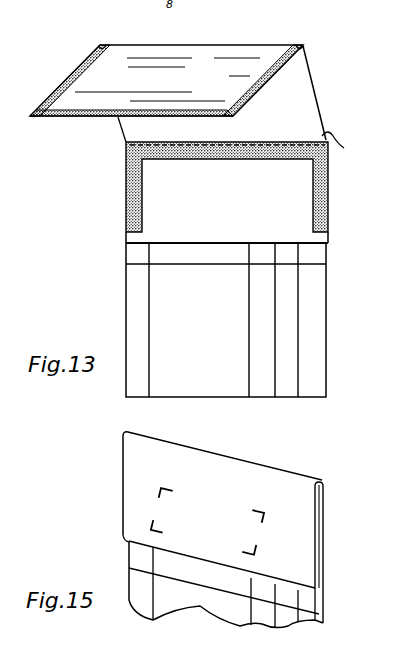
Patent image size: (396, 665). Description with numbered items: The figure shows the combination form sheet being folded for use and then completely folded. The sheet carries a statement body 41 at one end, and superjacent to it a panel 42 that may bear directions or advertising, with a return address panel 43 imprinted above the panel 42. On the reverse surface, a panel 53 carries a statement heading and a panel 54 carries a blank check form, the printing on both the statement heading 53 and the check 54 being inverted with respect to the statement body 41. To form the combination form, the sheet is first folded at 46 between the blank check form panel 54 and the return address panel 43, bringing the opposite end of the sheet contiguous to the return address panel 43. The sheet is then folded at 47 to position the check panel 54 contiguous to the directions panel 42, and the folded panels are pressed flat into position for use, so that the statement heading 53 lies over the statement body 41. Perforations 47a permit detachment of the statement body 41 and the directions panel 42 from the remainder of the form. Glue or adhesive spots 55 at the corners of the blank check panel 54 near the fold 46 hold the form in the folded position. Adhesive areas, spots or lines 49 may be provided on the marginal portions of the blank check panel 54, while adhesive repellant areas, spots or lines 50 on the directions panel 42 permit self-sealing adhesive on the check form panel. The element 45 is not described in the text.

In FIG. 13, the statement body 41 is at (316, 331).
In FIG. 15, the statement body 41 is at (176, 610).
In FIG. 13, the panel 42 is at (196, 195).
In FIG. 13, the return address panel 43 is at (296, 114).
In FIG. 13, the fold line of cover 45 is at (330, 243).
In FIG. 13, the fold 46 is at (178, 85).
In FIG. 15, the fold 46 is at (129, 541).
In FIG. 15, the fold 47 is at (286, 474).
In FIG. 13, the perforations 47a is at (343, 146).
In FIG. 13, the adhesive or glue areas, spots or lines 49 is at (64, 82).
In FIG. 13, the adhesive repellant areas, spots or lines 50 is at (125, 181).
In FIG. 15, the statement heading panel 53 is at (300, 518).
In FIG. 13, the blank check form panel 54 is at (69, 103).
In FIG. 13, the glue or adhesive spots 55 is at (98, 46).